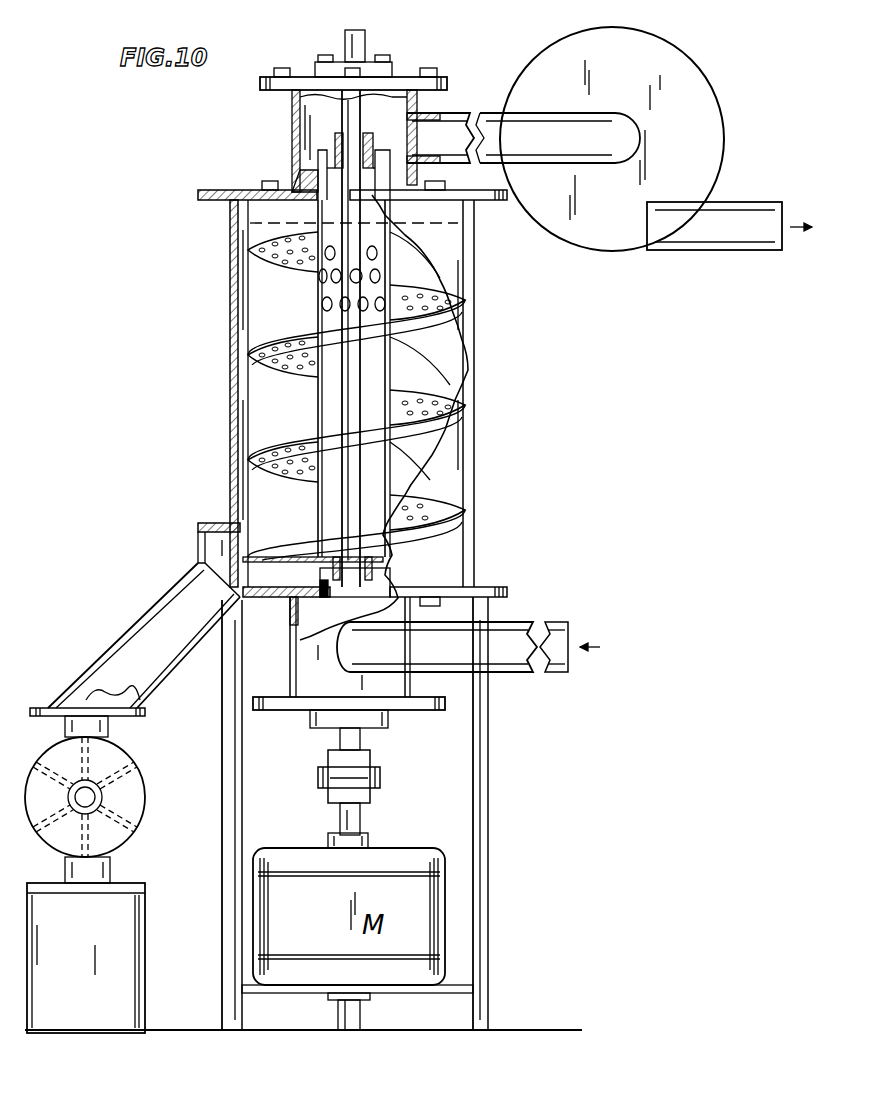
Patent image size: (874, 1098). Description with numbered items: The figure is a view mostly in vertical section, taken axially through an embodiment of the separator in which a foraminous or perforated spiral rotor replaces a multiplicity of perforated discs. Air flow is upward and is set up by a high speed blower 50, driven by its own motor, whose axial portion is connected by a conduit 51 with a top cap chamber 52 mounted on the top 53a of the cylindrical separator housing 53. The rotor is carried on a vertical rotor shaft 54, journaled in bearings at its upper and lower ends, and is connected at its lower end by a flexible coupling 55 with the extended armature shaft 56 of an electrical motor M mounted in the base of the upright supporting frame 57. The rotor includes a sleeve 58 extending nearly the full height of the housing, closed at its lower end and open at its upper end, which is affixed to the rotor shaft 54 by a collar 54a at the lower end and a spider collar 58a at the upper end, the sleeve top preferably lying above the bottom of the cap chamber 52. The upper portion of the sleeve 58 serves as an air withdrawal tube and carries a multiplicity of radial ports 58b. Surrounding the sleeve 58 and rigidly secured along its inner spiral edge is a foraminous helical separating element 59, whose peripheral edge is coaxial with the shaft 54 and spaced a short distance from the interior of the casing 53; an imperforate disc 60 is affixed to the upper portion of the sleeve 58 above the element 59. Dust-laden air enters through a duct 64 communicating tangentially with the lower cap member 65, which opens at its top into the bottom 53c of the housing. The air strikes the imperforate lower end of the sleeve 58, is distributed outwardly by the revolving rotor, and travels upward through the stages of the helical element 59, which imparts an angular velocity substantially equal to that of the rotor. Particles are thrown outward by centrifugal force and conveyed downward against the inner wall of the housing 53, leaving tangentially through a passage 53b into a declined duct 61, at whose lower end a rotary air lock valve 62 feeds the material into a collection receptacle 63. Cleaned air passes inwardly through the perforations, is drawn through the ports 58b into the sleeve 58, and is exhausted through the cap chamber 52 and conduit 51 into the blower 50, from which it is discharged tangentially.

The high speed blower 50 is at (697, 104).
The conduit 51 is at (481, 112).
The top cap chamber 52 is at (403, 92).
The cylindrical separator housing 53 is at (470, 366).
The top of separator housing 53a is at (498, 202).
The passage 53b is at (210, 541).
The bottom of separator housing 53c is at (496, 588).
The vertical rotor shaft 54 is at (356, 117).
The collar 54a is at (372, 574).
The flexible coupling 55 is at (378, 770).
The extended armature shaft 56 is at (362, 822).
The upright supporting frame 57 is at (243, 813).
The sleeve 58 is at (321, 405).
The spider collar 58a is at (378, 153).
The radial ports 58b is at (326, 300).
The foraminous helical separating element 59 is at (256, 452).
The imperforate disc 60 is at (252, 190).
The declined duct 61 is at (136, 619).
The rotary air lock valve 62 is at (138, 821).
The collection receptacle 63 is at (130, 944).
The conduit or duct 64 is at (516, 624).
The lower cap member 65 is at (296, 640).